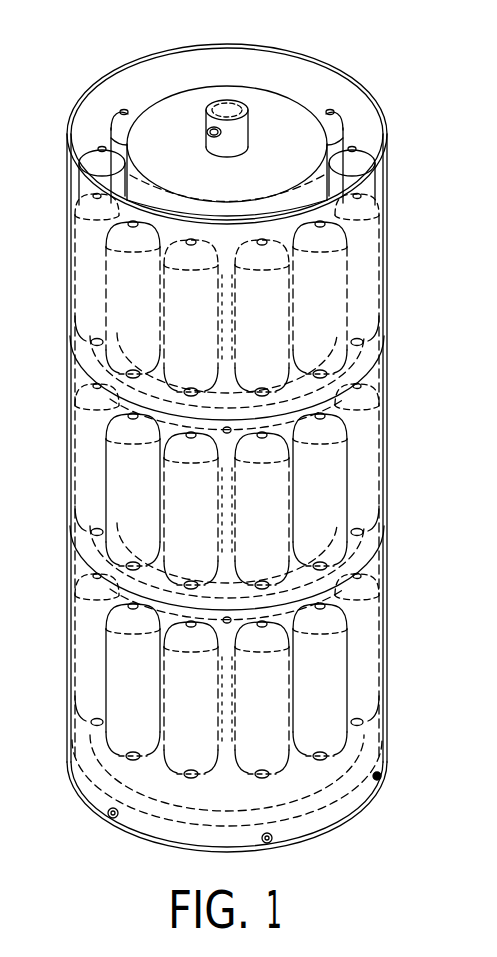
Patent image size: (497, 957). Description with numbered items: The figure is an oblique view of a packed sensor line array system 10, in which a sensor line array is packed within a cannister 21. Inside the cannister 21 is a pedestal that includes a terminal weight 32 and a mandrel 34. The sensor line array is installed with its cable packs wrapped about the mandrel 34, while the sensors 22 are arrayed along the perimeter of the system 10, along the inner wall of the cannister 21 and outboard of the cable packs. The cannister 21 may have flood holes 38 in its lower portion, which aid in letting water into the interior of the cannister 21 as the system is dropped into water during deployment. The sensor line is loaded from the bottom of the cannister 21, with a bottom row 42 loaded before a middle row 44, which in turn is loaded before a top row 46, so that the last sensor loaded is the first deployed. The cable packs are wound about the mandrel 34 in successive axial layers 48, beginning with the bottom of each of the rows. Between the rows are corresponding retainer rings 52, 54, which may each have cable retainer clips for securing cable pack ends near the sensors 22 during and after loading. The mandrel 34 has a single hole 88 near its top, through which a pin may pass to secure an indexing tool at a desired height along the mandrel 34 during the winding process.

The packed sensor line array system 10 is at (96, 44).
The cannister 21 is at (340, 70).
The sensors 22 is at (320, 460).
The terminal weight 32 is at (363, 737).
The mandrel 34 is at (228, 108).
The flood holes 38 is at (380, 780).
The bottom row (layer) 42 is at (418, 633).
The middle row (layer) 44 is at (418, 497).
The top row (layer) 46 is at (402, 219).
The axial layers 48 is at (293, 196).
The retainer ring 52 is at (388, 557).
The retainer ring 54 is at (387, 356).
The hole 88 is at (207, 132).